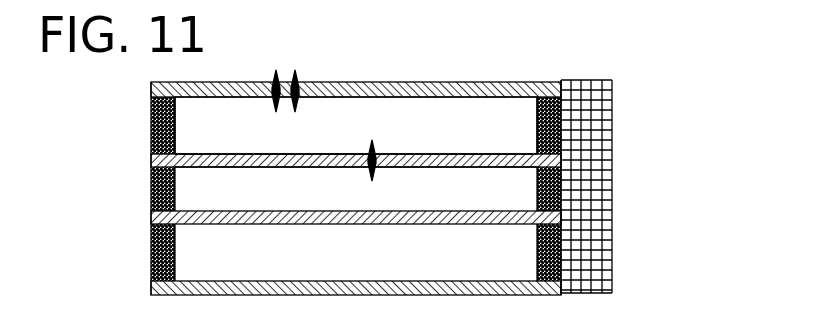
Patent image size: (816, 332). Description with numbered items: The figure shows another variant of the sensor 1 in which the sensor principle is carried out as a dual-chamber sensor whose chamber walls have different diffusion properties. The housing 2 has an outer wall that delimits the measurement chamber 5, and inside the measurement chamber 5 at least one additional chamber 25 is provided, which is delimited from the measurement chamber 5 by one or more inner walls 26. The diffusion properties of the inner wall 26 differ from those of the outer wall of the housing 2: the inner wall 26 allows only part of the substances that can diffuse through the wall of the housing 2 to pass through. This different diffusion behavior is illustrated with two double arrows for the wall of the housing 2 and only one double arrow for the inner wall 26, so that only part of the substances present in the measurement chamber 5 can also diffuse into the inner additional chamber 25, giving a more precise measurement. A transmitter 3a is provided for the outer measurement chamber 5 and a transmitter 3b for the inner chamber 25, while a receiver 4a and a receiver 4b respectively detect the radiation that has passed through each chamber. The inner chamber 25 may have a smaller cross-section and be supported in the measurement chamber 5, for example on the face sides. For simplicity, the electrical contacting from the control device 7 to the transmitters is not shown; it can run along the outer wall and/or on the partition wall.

The sensor 1 is at (658, 88).
The housing 2 is at (318, 82).
The transmitter 3a is at (153, 160).
The transmitter 3b is at (153, 240).
The receiver 4a is at (562, 180).
The receiver 4b is at (562, 264).
The measurement chamber 5 is at (421, 128).
The control device 7 is at (612, 185).
The additional chamber 25 is at (463, 175).
The inner wall 26 is at (337, 154).